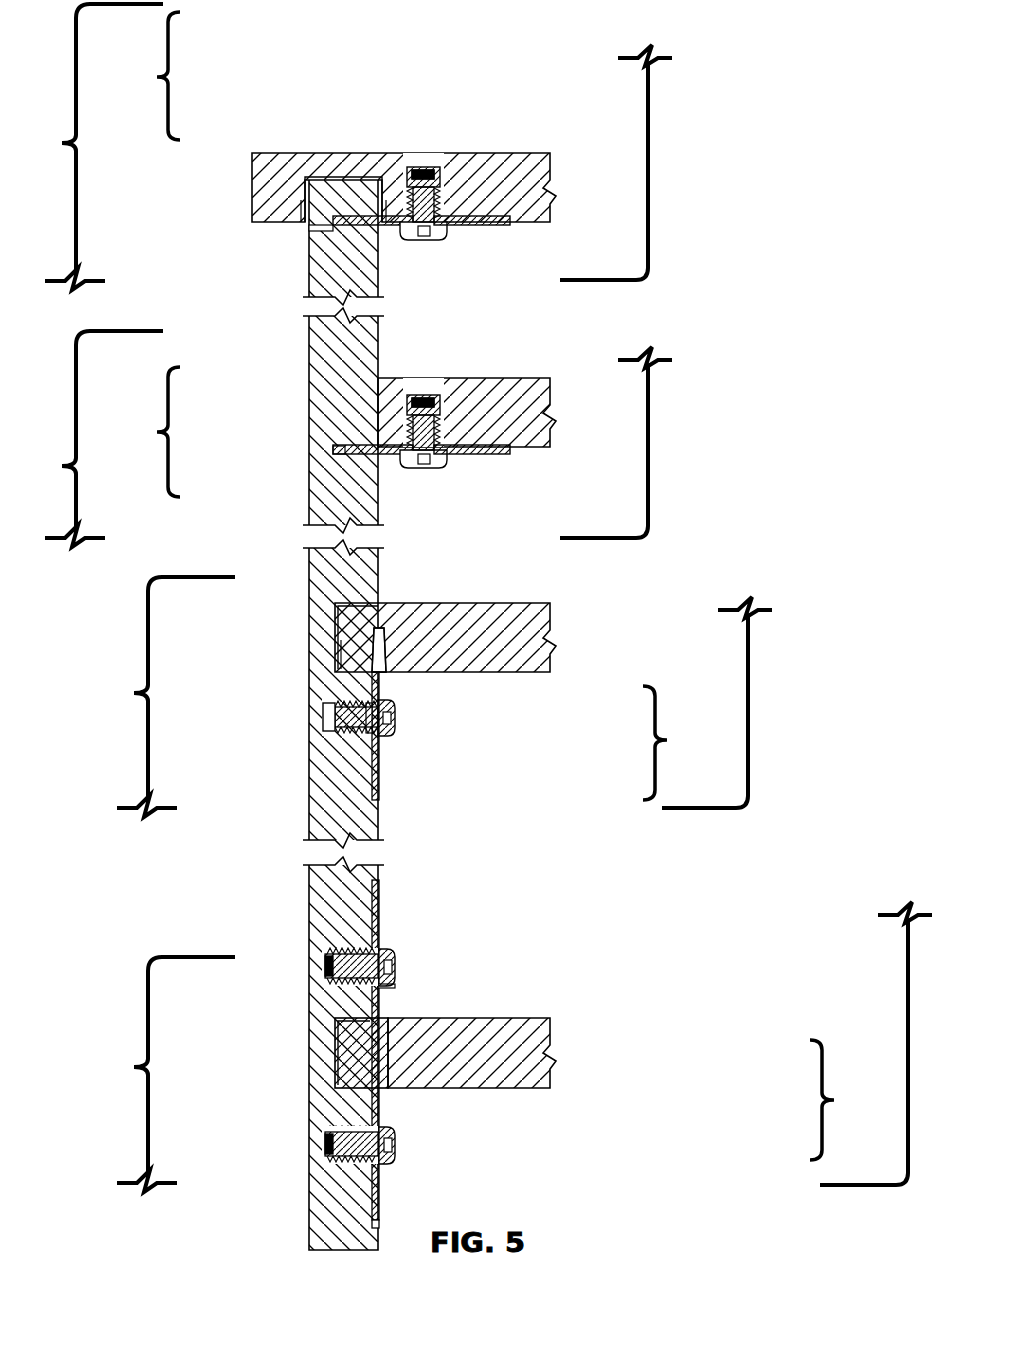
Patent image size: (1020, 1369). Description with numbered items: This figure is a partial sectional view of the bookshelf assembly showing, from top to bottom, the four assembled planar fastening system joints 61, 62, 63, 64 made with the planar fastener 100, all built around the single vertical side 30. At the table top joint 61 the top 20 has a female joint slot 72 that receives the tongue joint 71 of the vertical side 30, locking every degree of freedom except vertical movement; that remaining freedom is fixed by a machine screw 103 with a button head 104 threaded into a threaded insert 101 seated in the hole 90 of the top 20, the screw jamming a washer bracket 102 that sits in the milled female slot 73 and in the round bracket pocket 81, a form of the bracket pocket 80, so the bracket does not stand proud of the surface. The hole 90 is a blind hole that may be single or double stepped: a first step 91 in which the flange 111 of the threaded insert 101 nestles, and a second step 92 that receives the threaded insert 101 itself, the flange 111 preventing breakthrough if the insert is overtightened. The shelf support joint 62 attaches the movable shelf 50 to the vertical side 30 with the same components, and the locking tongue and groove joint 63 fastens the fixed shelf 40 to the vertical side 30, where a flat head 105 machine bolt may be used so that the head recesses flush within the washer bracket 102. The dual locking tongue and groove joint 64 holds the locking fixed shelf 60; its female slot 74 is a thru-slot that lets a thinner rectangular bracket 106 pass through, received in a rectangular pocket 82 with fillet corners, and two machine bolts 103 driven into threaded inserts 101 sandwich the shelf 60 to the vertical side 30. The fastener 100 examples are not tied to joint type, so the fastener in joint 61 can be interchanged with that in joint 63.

The top 20 is at (457, 163).
The vertical side 30 is at (307, 262).
The fixed shelf 40 is at (527, 653).
The movable shelf 50 is at (530, 436).
The fixed shelf 60 is at (526, 1028).
The table top joint 61 is at (345, 147).
The shelf support joint 62 is at (345, 436).
The locking tongue and groove joint 63 is at (430, 695).
The dual locking tongue and groove joint 64 is at (510, 1036).
The tongue joint 71 is at (305, 200).
The female joint slot 72 is at (241, 617).
The female slot 73 is at (322, 232).
The female slot 74 is at (380, 1050).
The bracket pocket 80 is at (526, 627).
The round pocket 81 is at (445, 627).
The rectangular pocket 82 is at (390, 877).
The hole 90 is at (458, 208).
The first step 91 is at (504, 224).
The second step 92 is at (465, 180).
The planar fastener 100 is at (495, 620).
The threaded insert 101 is at (407, 170).
The washer bracket 102 is at (387, 214).
The machine screw 103 is at (496, 637).
The button head machine bolt 104 is at (395, 238).
The flat head machine bolt 105 is at (384, 732).
The bracket 106 is at (384, 1198).
The flange 111 is at (401, 203).